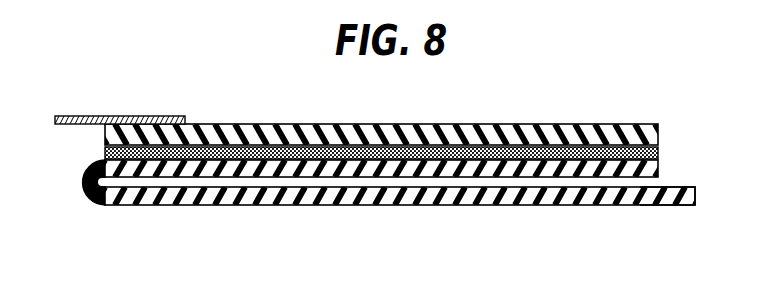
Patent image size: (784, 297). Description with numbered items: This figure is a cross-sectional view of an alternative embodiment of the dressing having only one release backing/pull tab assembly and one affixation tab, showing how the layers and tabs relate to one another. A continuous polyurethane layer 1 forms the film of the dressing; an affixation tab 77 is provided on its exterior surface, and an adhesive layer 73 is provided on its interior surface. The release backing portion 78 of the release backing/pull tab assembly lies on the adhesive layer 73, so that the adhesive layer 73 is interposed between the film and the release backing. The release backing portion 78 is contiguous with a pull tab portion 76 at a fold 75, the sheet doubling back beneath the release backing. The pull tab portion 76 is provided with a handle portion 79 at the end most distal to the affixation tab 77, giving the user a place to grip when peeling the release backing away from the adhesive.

The continuous polyurethane layer 1 is at (668, 130).
The adhesive layer 73 is at (97, 153).
The fold 75 is at (87, 195).
The pull tab portion 76 is at (424, 218).
The affixation tab 77 is at (77, 106).
The release backing portion 78 is at (668, 174).
The handle portion 79 is at (703, 207).